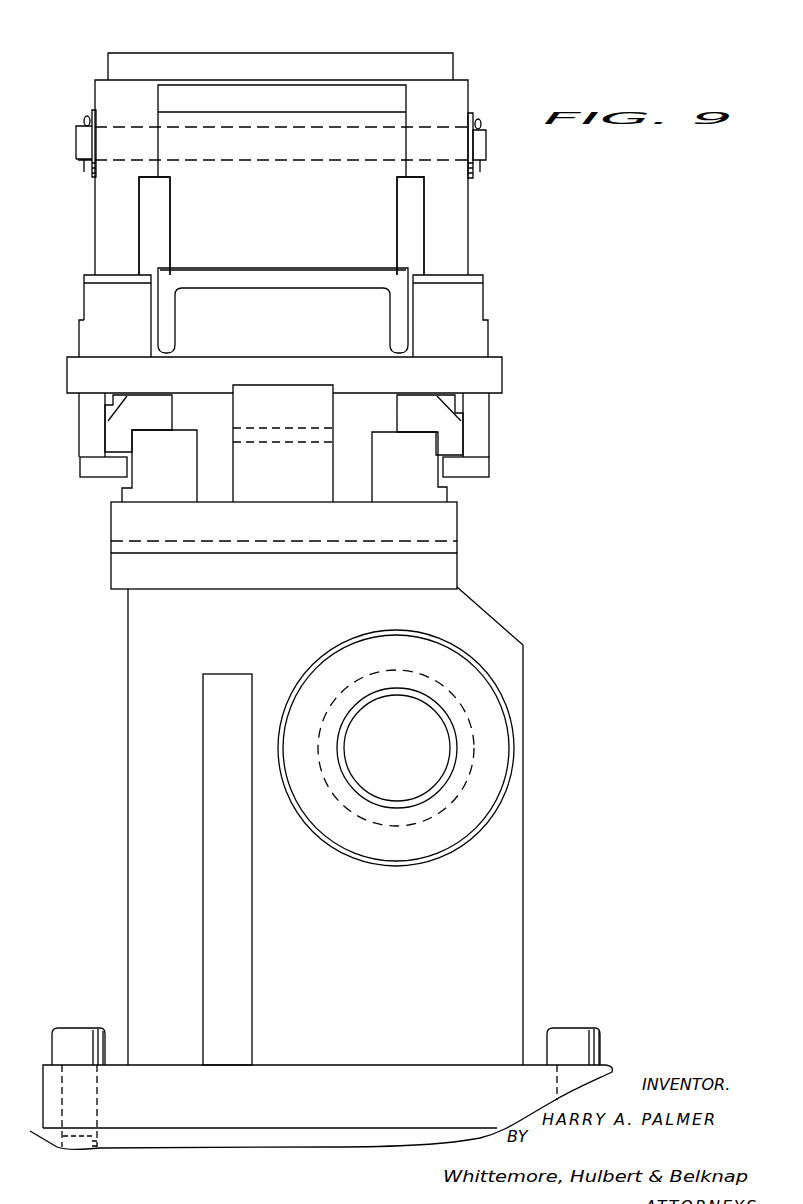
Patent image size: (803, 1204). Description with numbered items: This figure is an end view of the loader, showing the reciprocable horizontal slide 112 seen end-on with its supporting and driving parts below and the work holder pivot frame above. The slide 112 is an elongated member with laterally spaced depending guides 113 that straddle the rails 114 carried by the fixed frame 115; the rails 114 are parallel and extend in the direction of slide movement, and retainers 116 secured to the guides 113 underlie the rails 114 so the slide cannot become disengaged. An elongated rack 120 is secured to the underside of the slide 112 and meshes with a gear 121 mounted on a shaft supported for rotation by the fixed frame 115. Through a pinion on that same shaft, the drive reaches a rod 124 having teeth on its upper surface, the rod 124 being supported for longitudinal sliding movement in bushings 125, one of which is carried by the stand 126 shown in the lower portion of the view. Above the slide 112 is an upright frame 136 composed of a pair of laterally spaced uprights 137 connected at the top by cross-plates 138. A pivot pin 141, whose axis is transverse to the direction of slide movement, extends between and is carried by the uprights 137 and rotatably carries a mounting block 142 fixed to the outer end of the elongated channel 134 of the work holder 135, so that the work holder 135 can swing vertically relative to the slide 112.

The horizontal slide 112 is at (494, 383).
The depending guides 113 is at (87, 440).
The rails 114 is at (165, 413).
The fixed frame 115 is at (185, 472).
The retainers 116 is at (98, 466).
The rack 120 is at (281, 384).
The gear 121 is at (318, 484).
The rod 124 is at (418, 783).
The bushings 125 is at (465, 783).
The stand 126 is at (517, 998).
The channel 134 is at (222, 268).
The work holder 135 is at (303, 268).
The upright frame 136 is at (480, 257).
The uprights 137 is at (468, 232).
The cross-plates 138 is at (388, 72).
The pivot pin 141 is at (487, 152).
The mounting block 142 is at (281, 158).